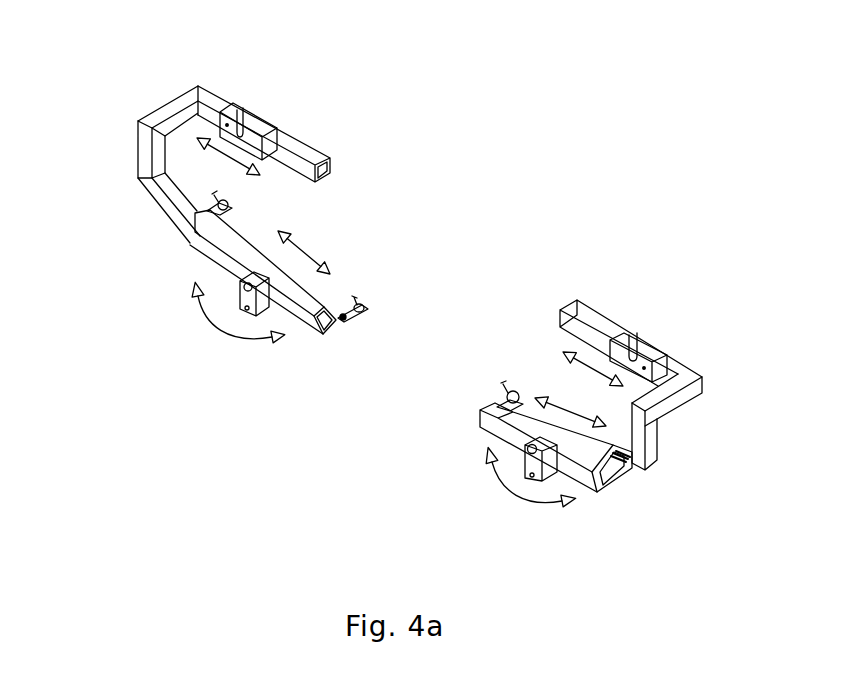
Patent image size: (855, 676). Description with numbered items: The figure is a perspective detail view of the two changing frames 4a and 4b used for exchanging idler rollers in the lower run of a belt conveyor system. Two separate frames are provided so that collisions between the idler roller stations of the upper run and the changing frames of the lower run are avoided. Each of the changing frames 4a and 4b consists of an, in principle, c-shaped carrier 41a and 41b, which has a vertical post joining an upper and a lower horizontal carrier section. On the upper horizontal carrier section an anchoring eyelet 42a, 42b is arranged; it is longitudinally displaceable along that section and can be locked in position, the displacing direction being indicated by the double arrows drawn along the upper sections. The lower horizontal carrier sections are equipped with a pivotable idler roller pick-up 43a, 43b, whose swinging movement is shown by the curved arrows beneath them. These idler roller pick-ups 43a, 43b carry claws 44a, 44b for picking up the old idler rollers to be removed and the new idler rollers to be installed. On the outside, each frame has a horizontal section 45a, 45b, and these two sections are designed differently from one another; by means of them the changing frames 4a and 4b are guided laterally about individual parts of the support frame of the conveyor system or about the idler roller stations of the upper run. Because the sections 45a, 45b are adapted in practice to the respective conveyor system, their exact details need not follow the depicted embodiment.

The changing frame 4a is at (152, 311).
The changing frame 4b is at (472, 501).
The c-shaped carrier 41a is at (147, 147).
The c-shaped carrier 41b is at (643, 425).
The anchoring eyelet 42a is at (242, 127).
The anchoring eyelet 42b is at (640, 333).
The pivotable idler roller pick-up 43a is at (290, 276).
The pivotable idler roller pick-up 43b is at (535, 423).
The claws 44a is at (230, 197).
The claws 44b is at (503, 393).
The horizontal section 45a is at (170, 106).
The horizontal section 45b is at (683, 393).